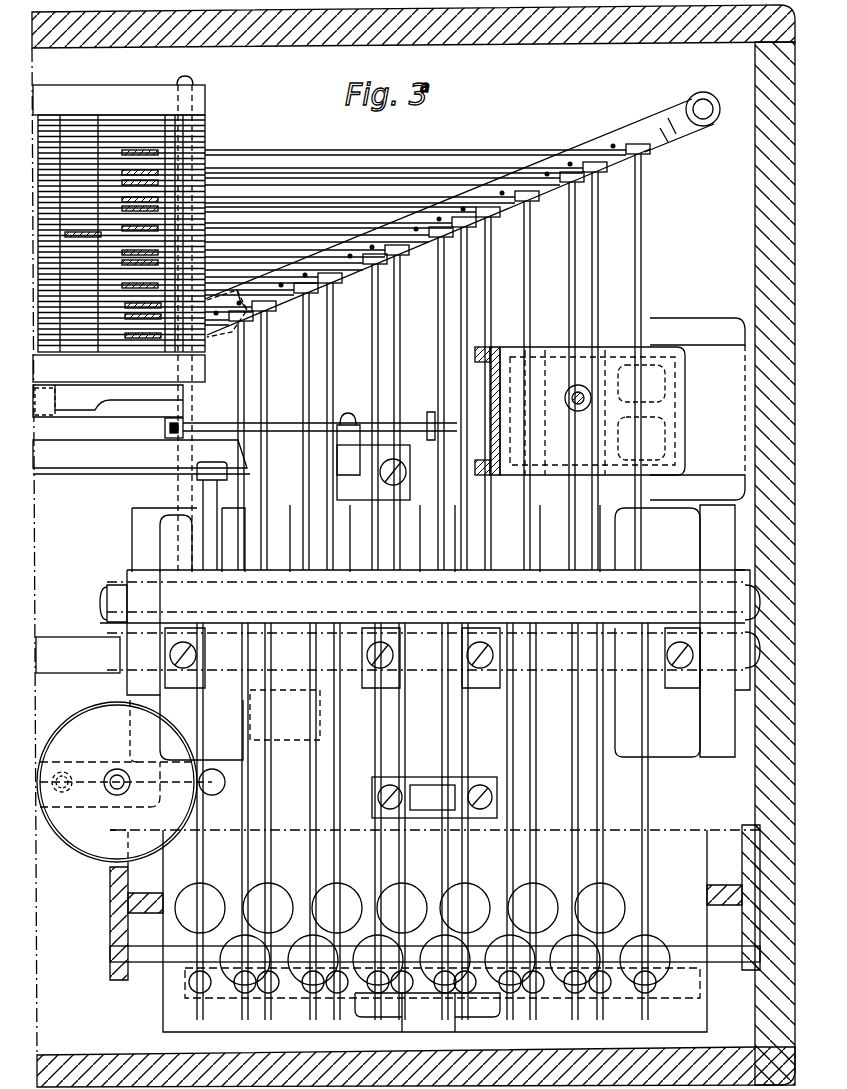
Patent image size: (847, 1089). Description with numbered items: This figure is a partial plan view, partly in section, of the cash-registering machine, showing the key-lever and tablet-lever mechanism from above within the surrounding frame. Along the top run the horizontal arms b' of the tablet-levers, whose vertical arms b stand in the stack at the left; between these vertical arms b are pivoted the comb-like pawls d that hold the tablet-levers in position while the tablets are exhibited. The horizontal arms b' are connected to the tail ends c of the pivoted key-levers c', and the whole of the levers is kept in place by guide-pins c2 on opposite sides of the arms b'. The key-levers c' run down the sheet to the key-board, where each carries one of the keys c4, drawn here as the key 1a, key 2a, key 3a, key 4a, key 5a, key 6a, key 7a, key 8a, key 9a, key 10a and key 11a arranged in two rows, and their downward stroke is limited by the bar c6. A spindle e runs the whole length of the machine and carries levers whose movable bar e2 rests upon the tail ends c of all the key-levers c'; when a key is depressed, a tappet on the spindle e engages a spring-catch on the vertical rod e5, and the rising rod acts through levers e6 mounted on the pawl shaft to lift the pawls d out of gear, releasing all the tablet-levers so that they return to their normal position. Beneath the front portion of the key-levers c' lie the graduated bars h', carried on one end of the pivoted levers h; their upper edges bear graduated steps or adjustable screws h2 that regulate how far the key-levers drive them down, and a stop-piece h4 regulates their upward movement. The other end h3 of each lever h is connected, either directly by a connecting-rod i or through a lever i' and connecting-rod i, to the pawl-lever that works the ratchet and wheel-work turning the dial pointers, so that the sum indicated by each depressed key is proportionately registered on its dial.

The pawls d is at (105, 125).
The vertical arm of tablet-lever b is at (113, 244).
The horizontal arm of tablet-lever b' is at (415, 227).
The tail end of key-lever c is at (446, 362).
The key-lever c' is at (443, 821).
The guide-pins c2 is at (612, 160).
The keys c4 is at (420, 916).
The bar c6 is at (435, 902).
The spindle e is at (131, 741).
The movable bar e2 is at (141, 457).
The vertical rod e5 is at (45, 400).
The levers e6 is at (108, 401).
The connecting-rod i is at (163, 430).
The lever i' is at (464, 409).
The lever h is at (430, 653).
The graduated bar h' is at (442, 967).
The graduated steps h2 is at (422, 940).
The end of lever h3 is at (469, 472).
The stop-piece h4 is at (478, 790).
The key 1 1a is at (200, 908).
The key 2 2a is at (245, 960).
The key 3 3a is at (268, 908).
The key 4 4a is at (313, 960).
The key 5 5a is at (337, 908).
The key 6 6a is at (378, 960).
The key 7 7a is at (510, 960).
The key 8 8a is at (533, 908).
The key 9 9a is at (575, 960).
The key 10 10a is at (600, 908).
The key 11 11a is at (645, 960).